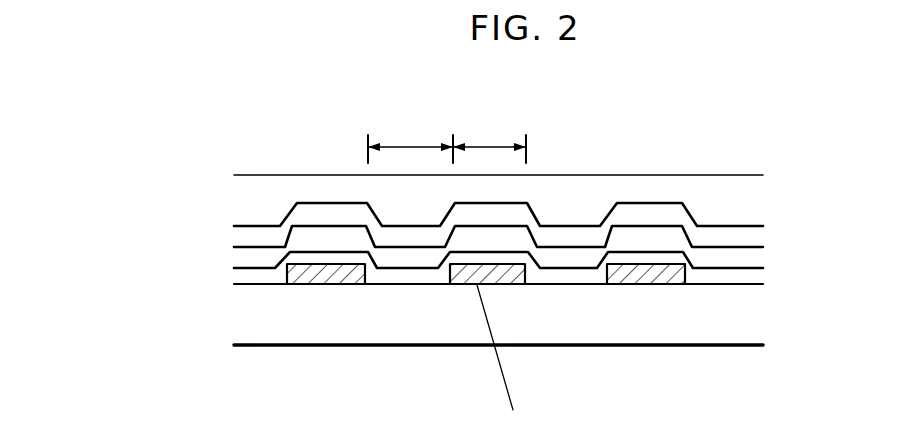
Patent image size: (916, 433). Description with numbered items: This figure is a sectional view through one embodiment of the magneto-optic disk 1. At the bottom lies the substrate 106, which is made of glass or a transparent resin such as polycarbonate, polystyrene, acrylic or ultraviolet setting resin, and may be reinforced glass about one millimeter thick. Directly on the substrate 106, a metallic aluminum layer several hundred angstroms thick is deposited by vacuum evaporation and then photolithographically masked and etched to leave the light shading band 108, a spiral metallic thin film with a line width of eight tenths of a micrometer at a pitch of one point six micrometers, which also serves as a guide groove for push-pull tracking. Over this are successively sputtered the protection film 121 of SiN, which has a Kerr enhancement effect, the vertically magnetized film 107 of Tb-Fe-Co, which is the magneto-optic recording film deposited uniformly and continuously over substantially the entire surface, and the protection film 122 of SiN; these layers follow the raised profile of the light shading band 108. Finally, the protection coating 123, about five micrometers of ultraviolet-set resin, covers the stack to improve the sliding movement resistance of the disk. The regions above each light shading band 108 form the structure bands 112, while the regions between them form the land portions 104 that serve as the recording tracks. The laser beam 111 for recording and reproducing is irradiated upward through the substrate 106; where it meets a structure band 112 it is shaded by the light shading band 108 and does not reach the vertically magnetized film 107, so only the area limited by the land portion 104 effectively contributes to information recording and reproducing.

The magneto-optic disk 1 is at (207, 103).
The land portion 104 is at (415, 145).
The structure band 112 is at (492, 145).
The protection coating 123 is at (737, 193).
The protection film 122 is at (747, 238).
The vertically magnetized film 107 is at (747, 258).
The protection film 121 is at (752, 277).
The light shading band 108 is at (675, 286).
The laser beam 111 is at (343, 285).
The substrate 106 is at (713, 325).